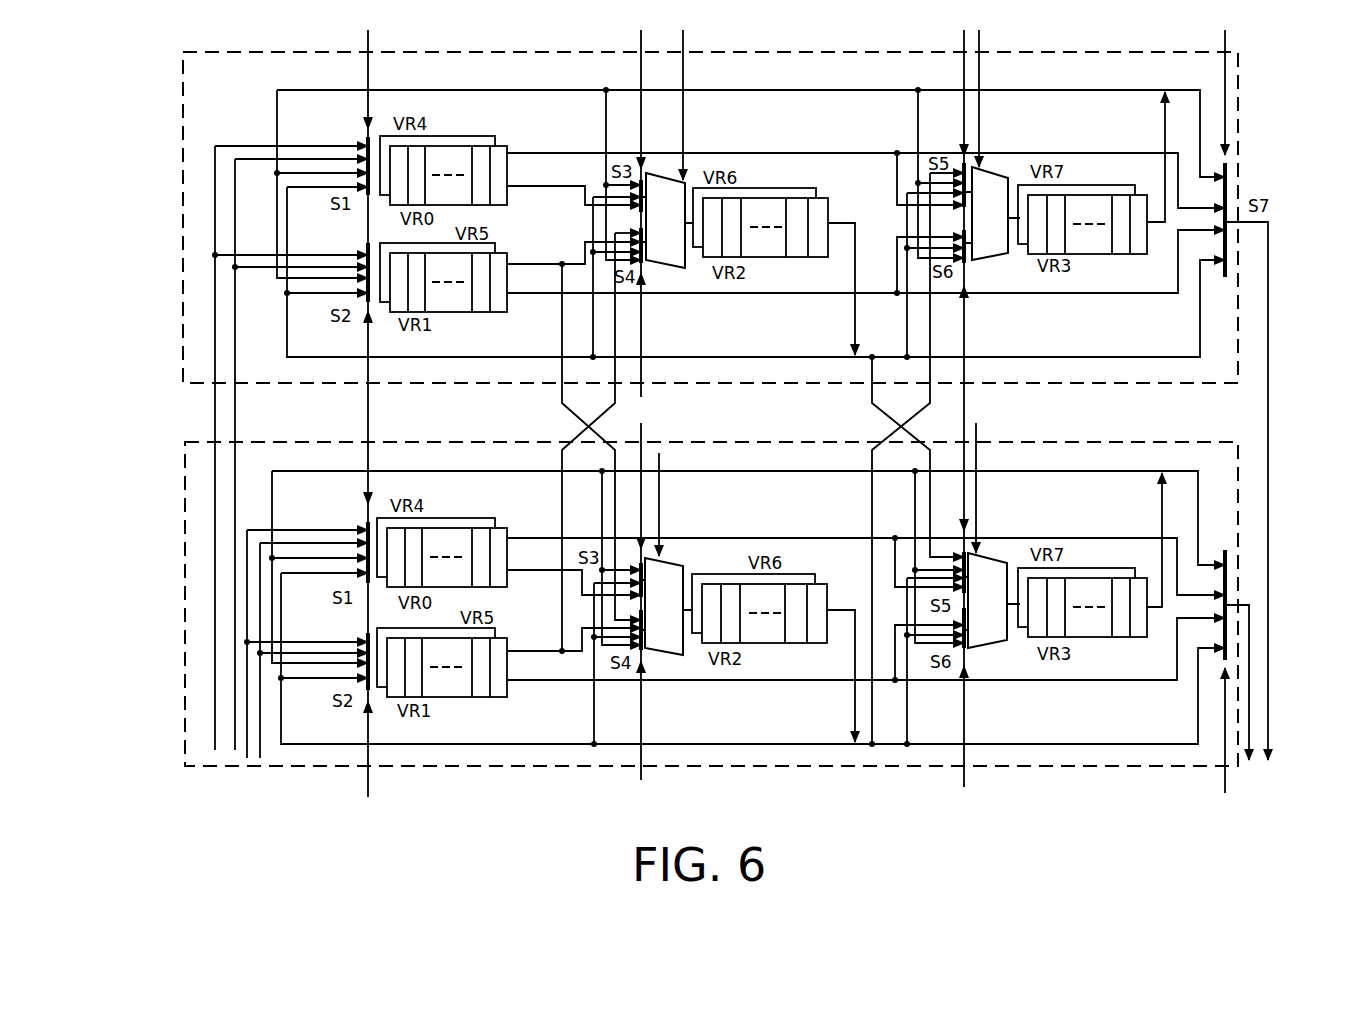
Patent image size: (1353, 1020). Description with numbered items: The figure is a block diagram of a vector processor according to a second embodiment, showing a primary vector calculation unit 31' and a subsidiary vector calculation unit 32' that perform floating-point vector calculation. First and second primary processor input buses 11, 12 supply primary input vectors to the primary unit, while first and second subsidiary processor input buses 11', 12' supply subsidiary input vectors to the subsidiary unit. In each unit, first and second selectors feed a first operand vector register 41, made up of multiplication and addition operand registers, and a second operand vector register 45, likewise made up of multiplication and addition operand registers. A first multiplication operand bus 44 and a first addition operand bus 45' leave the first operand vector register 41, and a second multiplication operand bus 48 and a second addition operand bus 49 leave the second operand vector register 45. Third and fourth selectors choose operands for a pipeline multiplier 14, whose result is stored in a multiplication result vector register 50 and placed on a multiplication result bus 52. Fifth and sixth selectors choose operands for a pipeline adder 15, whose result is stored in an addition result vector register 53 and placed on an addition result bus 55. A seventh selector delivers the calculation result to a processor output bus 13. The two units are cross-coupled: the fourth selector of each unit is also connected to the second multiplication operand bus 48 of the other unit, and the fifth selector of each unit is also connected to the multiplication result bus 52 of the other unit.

The primary vector calculation unit 31' is at (663, 209).
The subsidiary vector calculation unit 32' is at (662, 592).
The addition result bus 55 is at (713, 85).
The first operand vector register 41 is at (478, 131).
The second operand vector register 45 is at (464, 470).
The pipeline multiplier 14 is at (660, 173).
The pipeline adder 15 is at (977, 164).
The multiplication result vector register 50 is at (792, 186).
The addition result vector register 53 is at (1092, 176).
The first addition operand bus 45' is at (866, 347).
The first multiplication operand bus 44 is at (528, 187).
The second multiplication operand bus 48 is at (533, 263).
The second addition operand bus 49 is at (693, 294).
The multiplication result bus 52 is at (772, 355).
The first primary processor input bus 11 is at (250, 448).
The second primary processor input bus 12 is at (253, 454).
The first subsidiary processor input bus 11' is at (255, 649).
The second subsidiary processor input bus 12' is at (312, 681).
The processor output bus 13 is at (1250, 698).